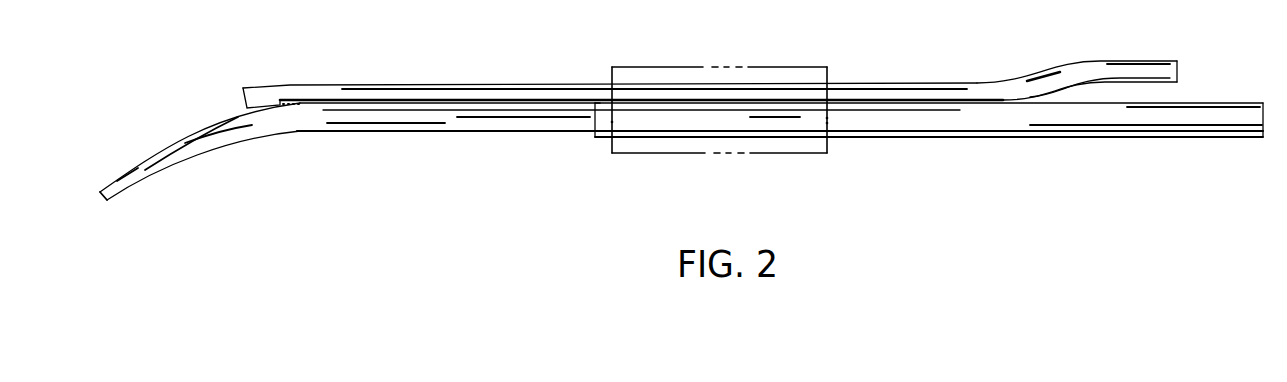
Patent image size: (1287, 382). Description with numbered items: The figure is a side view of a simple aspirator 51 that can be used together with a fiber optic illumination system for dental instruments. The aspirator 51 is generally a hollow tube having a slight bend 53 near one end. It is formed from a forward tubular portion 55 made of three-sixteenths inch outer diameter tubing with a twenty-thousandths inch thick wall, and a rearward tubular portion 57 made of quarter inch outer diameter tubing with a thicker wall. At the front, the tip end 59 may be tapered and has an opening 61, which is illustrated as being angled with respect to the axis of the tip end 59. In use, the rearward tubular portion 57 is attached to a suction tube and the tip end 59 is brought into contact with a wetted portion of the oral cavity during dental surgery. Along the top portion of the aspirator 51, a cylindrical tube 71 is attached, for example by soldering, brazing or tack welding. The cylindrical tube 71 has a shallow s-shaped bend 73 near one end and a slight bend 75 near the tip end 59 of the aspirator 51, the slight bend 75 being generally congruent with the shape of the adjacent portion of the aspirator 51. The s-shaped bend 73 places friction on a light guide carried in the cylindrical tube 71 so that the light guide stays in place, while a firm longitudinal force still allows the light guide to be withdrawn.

The aspirator 51 is at (459, 78).
The slight bend 53 is at (278, 100).
The forward tubular portion 55 is at (427, 133).
The rearward tubular portion 57 is at (782, 125).
The tip end 59 is at (197, 122).
The opening 61 is at (104, 200).
The cylindrical tube 71 is at (588, 85).
The s shaped bend 73 is at (1058, 75).
The slight bend 75 is at (260, 88).